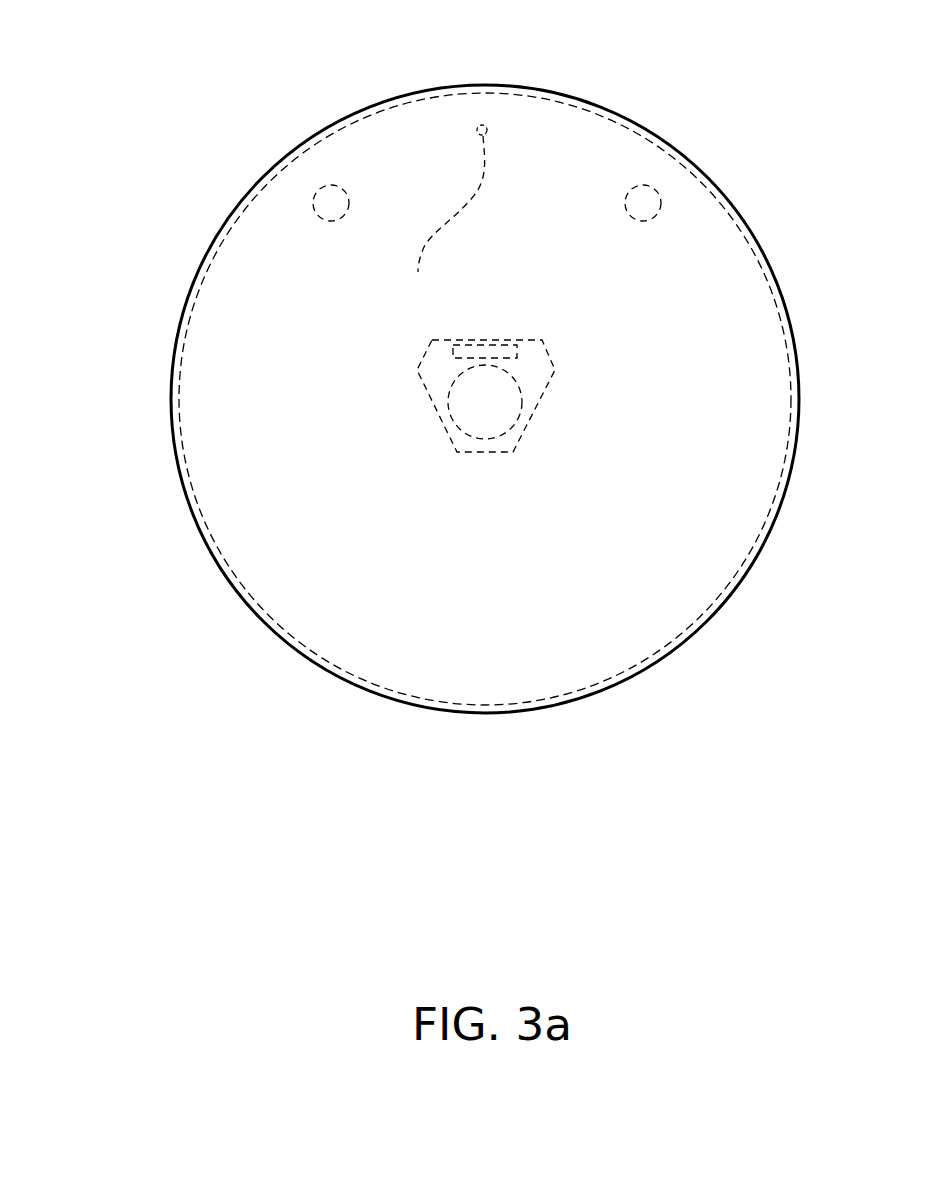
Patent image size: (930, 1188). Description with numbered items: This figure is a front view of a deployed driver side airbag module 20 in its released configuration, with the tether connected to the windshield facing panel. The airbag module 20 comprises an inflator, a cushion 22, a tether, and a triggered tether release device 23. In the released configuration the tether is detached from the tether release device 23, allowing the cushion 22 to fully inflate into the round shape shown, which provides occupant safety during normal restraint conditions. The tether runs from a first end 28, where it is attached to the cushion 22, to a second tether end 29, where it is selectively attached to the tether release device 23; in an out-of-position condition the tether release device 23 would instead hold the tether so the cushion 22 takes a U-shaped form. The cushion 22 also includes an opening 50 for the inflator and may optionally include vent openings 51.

The driver side airbag module 20 is at (399, 399).
The cushion 22 is at (230, 485).
The tether release device 23 is at (517, 345).
The first end 28 is at (487, 128).
The second tether end 29 is at (418, 273).
The opening 50 is at (523, 388).
The vent openings 51 is at (329, 185).